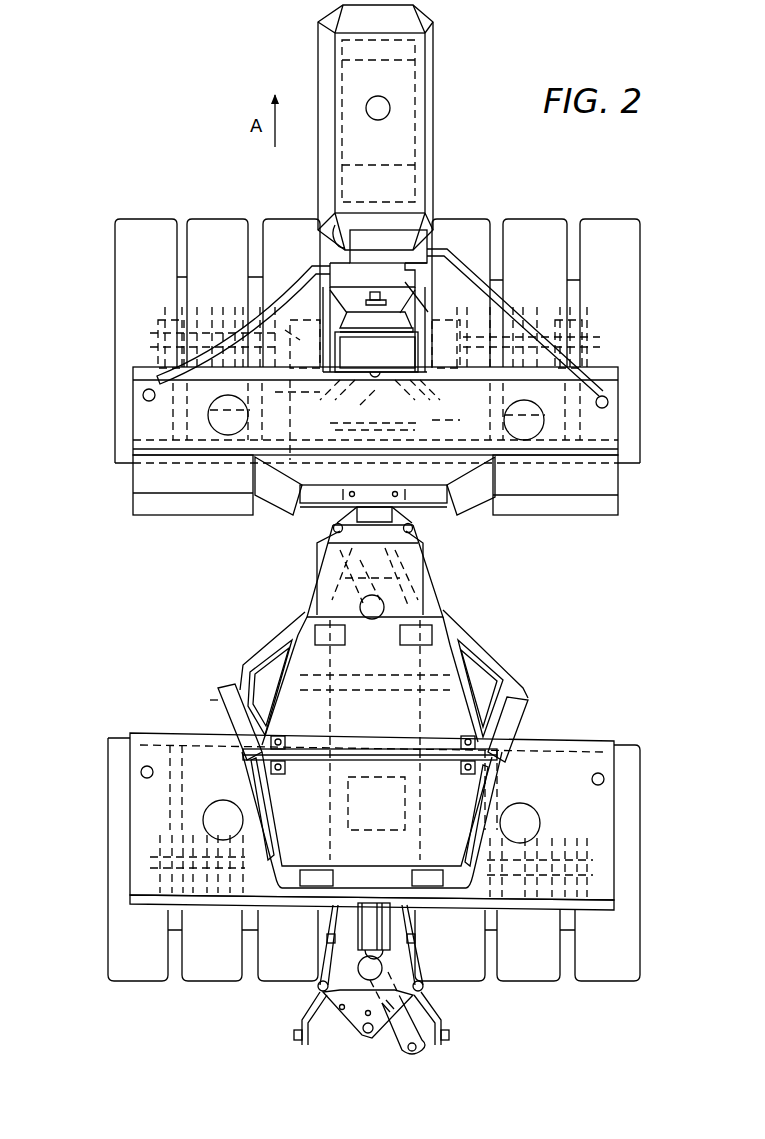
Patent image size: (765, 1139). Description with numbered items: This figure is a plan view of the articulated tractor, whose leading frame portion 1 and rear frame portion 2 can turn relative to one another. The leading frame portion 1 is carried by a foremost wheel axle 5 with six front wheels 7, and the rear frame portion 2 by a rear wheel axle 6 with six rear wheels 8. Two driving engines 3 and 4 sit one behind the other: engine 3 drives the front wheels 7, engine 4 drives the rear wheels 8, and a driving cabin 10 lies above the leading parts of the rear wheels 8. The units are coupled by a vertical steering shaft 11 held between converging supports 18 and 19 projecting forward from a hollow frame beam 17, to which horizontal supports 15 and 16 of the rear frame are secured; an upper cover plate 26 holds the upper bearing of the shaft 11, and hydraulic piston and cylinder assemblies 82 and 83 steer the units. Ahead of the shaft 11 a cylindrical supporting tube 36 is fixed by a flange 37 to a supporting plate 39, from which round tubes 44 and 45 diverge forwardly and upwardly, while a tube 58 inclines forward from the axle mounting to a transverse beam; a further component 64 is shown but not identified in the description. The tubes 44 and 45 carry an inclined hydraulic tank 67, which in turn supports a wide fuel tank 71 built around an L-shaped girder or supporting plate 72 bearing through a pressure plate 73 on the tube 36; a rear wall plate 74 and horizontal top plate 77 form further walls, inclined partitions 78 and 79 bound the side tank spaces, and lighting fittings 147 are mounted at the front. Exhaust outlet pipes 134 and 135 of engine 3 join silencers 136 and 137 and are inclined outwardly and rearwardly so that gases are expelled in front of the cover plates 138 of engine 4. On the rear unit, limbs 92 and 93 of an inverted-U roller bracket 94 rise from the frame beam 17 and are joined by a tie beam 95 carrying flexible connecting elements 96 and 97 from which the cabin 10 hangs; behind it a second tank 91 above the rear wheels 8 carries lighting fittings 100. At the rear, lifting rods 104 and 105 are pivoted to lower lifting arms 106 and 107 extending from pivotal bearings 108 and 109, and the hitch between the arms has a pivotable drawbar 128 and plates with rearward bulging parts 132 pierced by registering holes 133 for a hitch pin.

The leading frame portion 1 is at (108, 326).
The rear frame portion 2 is at (103, 770).
The driving engine 3 is at (400, 88).
The driving engine 4 is at (325, 580).
The foremost wheel axle 5 is at (150, 340).
The rear wheel axle 6 is at (150, 860).
The front wheels 7 is at (165, 220).
The rear wheels 8 is at (150, 978).
The driving cabin 10 is at (470, 638).
The vertical shaft 11 is at (440, 560).
The horizontal support 15 is at (418, 715).
The horizontal support 16 is at (333, 710).
The hollow frame beam 17 is at (520, 692).
The support 18 is at (445, 585).
The support 19 is at (320, 560).
The upper cover plate 26 is at (405, 482).
The supporting tube 36 is at (355, 470).
The flange 37 is at (422, 430).
The supporting plate 39 is at (385, 415).
The round tube 44 is at (308, 398).
The round tube 45 is at (430, 396).
The tube 58 is at (430, 300).
The mounting bracket 64 is at (340, 318).
The tank 67 is at (370, 368).
The fuel tank 71 is at (152, 418).
The supporting plate 72 is at (310, 462).
The pressure plate 73 is at (355, 514).
The plate 74 is at (160, 520).
The top plate 77 is at (150, 436).
The partition 78 is at (275, 515).
The partition 79 is at (470, 512).
The hydraulic piston and cylinder assembly 82 is at (303, 603).
The hydraulic piston and cylinder assembly 83 is at (447, 608).
The second tank 91 is at (152, 808).
The limb 92 is at (228, 712).
The limb 93 is at (520, 722).
The roller bracket 94 is at (308, 782).
The tie beam 95 is at (380, 750).
The flexible connecting element 96 is at (280, 736).
The flexible connecting element 97 is at (462, 778).
The lighting fittings 100 is at (235, 935).
The lifting rod 104 is at (330, 955).
The lifting rod 105 is at (425, 955).
The lower lifting arm 106 is at (298, 1017).
The lower lifting arm 107 is at (447, 1025).
The pivotal bearing 108 is at (327, 935).
The pivotal bearing 109 is at (425, 935).
The drawbar 128 is at (395, 1050).
The bulging parts 132 is at (355, 1032).
The holes 133 is at (367, 1036).
The outlet pipe 134 is at (300, 290).
The outlet pipe 135 is at (500, 300).
The silencer 136 is at (376, 270).
The silencer 137 is at (376, 228).
The cover plates 138 is at (374, 631).
The lighting fittings 147 is at (598, 358).